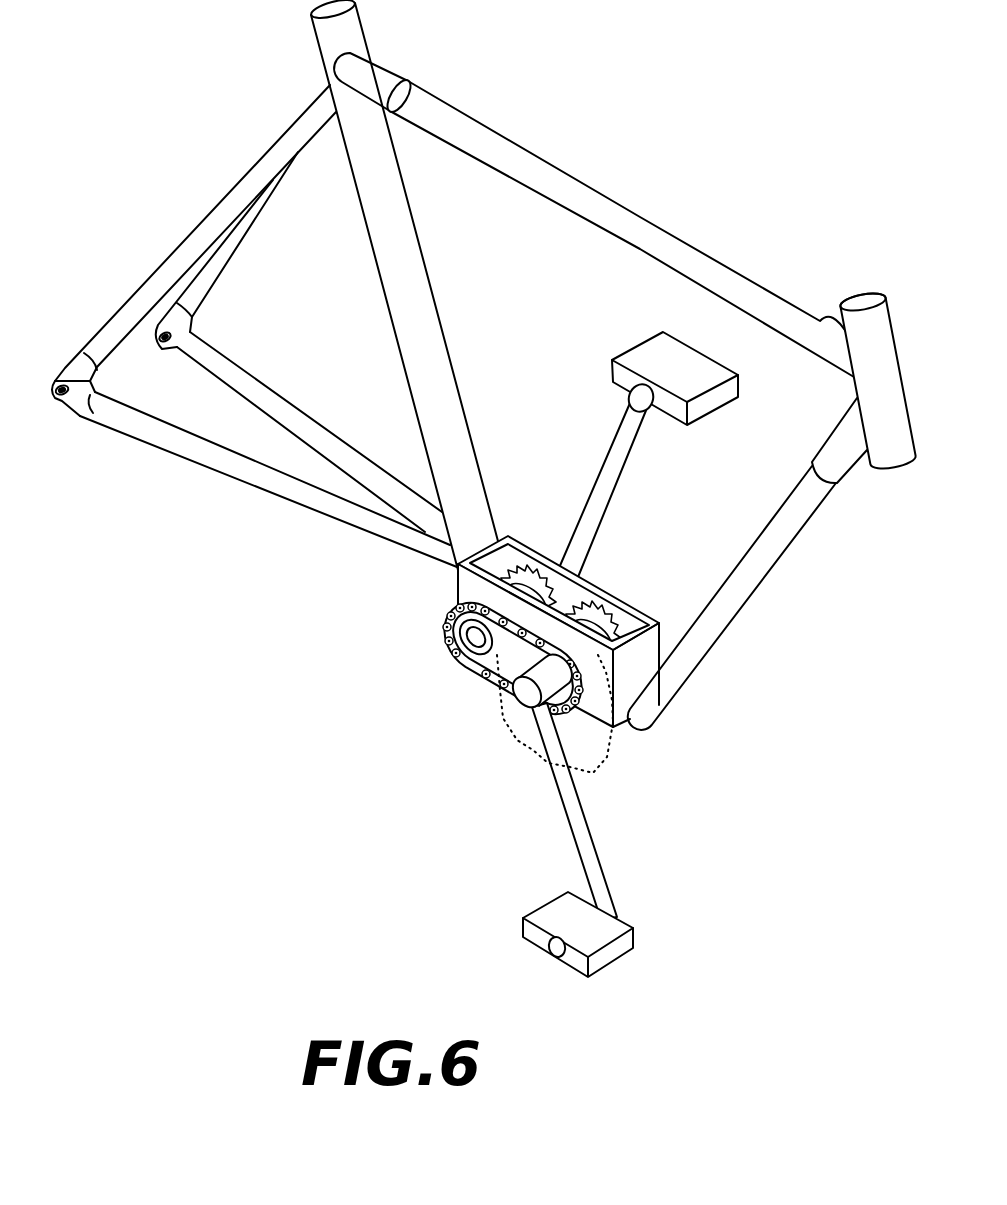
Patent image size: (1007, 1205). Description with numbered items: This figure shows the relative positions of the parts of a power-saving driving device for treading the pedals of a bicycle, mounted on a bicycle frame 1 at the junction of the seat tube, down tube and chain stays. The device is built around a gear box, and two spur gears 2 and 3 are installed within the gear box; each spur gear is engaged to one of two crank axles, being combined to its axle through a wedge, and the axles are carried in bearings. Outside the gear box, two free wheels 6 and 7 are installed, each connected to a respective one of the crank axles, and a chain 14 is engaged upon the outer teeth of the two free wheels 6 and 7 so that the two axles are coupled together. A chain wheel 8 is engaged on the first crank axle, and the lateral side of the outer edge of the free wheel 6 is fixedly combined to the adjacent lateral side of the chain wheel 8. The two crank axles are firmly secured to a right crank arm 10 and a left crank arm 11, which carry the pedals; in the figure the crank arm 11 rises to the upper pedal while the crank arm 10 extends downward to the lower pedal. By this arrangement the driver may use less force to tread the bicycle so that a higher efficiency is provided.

The bicycle frame 1 is at (455, 572).
The spur gear 2 is at (617, 605).
The spur gear 3 is at (546, 588).
The free wheel 6 is at (495, 720).
The free wheel 7 is at (463, 677).
The chain wheel 8 is at (529, 743).
The right crank arm 10 is at (587, 867).
The left crank arm 11 is at (610, 457).
The chain 14 is at (453, 648).